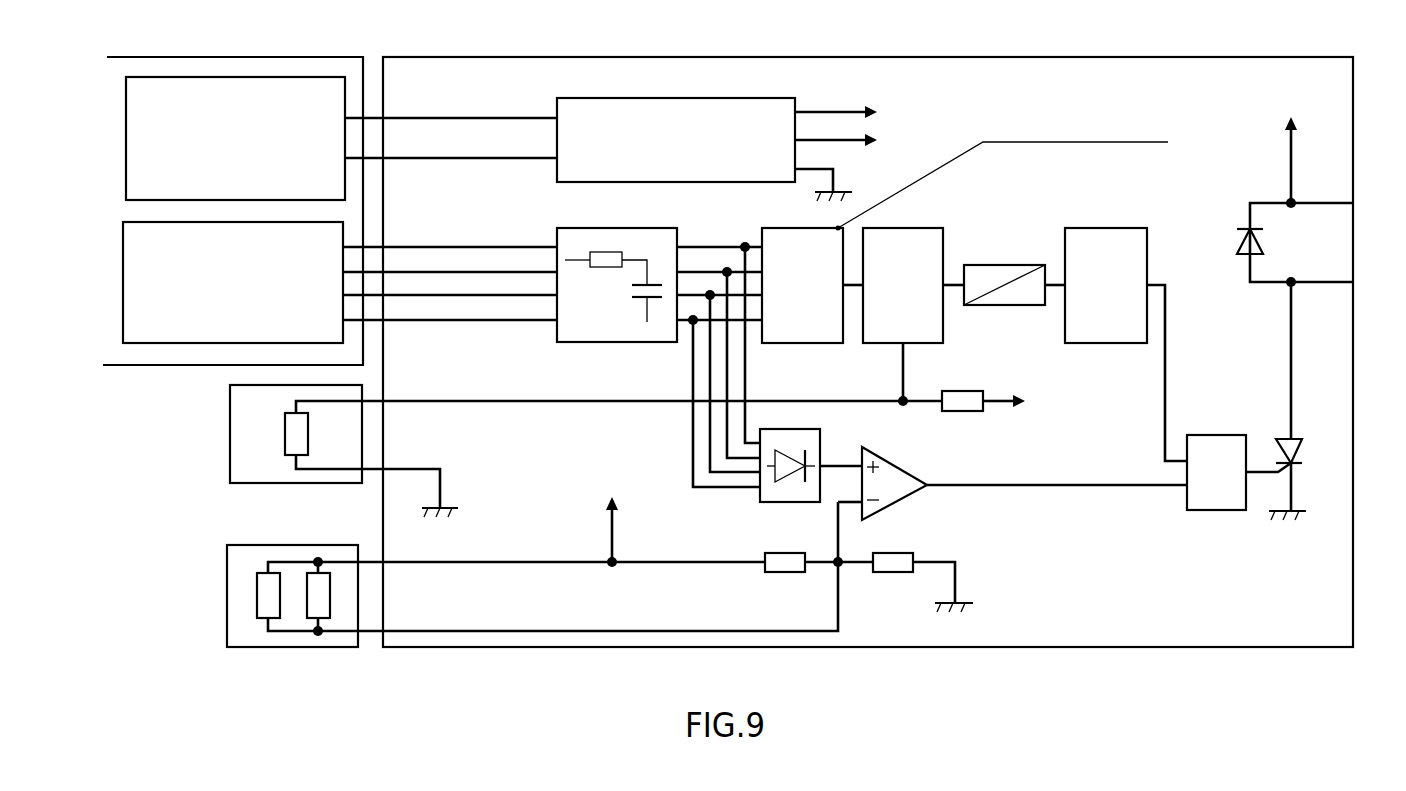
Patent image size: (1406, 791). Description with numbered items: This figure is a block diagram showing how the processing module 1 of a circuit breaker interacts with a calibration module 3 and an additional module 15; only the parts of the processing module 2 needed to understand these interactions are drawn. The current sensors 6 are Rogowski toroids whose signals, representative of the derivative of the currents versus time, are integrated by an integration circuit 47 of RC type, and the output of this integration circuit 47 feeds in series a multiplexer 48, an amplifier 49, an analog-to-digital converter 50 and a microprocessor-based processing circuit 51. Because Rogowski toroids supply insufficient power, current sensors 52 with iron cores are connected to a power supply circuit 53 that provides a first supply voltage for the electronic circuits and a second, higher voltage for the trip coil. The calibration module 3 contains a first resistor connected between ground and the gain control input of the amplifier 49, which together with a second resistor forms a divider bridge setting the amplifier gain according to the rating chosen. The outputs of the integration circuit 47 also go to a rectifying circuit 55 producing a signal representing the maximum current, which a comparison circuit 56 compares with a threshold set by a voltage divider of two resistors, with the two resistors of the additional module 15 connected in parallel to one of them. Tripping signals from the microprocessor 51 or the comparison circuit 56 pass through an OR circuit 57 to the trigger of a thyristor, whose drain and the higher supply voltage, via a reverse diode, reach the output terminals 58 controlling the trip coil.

The processing module 1 is at (233, 185).
The processing module 2 is at (868, 371).
The calibration module 3 is at (541, 451).
The current sensors 6 is at (317, 282).
The additional module 15 is at (504, 590).
The integration circuit 47 is at (659, 357).
The multiplexer 48 is at (965, 239).
The amplifier 49 is at (898, 314).
The analog-to-digital converter 50 is at (1014, 302).
The microprocessor-based processing circuit 51 is at (1126, 344).
The current sensors with iron cores 52 is at (309, 138).
The power supply circuit 53 is at (739, 154).
The rectifying circuit 55 is at (804, 482).
The comparison circuit 56 is at (1012, 484).
The OR circuit 57 is at (1223, 492).
The output terminals 58 is at (1319, 304).